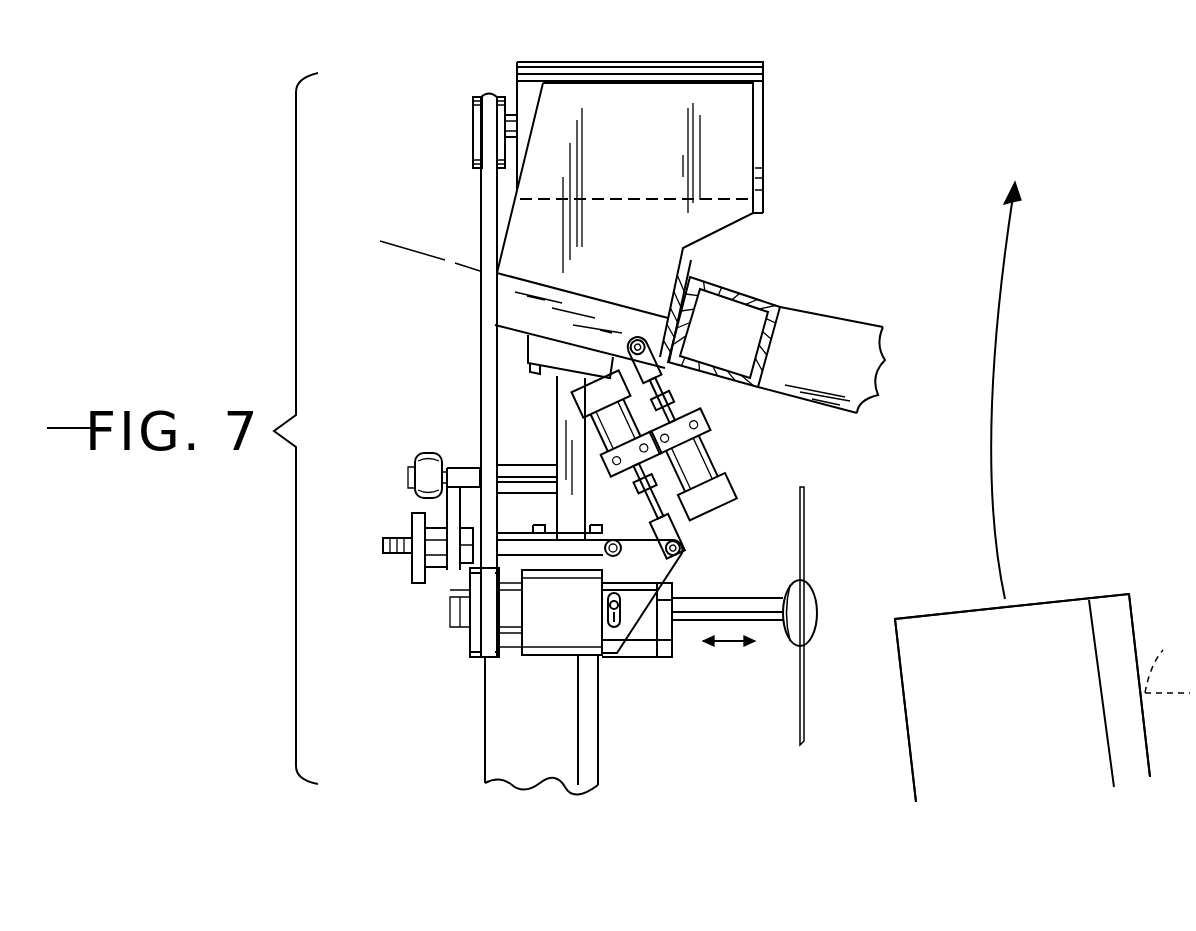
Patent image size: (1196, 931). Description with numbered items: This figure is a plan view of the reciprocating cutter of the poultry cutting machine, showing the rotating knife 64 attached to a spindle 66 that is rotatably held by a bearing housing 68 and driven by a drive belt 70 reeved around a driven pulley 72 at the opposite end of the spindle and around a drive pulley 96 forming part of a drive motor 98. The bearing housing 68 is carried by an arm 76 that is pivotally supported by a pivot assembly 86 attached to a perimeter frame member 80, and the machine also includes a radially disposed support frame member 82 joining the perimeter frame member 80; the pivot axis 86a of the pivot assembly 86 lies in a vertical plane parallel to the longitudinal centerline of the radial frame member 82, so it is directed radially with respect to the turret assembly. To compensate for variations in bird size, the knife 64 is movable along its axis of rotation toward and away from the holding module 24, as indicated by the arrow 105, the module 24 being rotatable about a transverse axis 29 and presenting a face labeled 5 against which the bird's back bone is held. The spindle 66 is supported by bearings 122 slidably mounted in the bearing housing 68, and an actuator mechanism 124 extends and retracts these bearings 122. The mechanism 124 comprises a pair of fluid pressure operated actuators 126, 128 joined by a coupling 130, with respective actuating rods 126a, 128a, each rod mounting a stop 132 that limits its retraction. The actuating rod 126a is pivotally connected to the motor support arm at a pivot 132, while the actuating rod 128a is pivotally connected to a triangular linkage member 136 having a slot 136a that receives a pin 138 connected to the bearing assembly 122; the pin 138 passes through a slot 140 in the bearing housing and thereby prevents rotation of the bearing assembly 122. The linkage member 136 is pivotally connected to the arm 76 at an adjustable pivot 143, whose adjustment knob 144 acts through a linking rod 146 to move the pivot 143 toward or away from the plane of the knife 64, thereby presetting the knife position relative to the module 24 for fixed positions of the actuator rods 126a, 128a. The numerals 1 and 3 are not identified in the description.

The drive motor 98 is at (752, 74).
The drive pulley 96 is at (473, 128).
The pivot axis 86a is at (388, 242).
The pivot assembly 86 is at (703, 262).
The stop 132 is at (638, 337).
The radially disposed support frame member 82 is at (808, 361).
The actuating rod 126a is at (724, 332).
The drive belt 70 is at (480, 380).
The fluid pressure operated actuator 128 is at (578, 410).
The actuating rod 128a is at (668, 510).
The coupling 130 is at (705, 412).
The actuator mechanism 124 is at (689, 402).
The fluid pressure operated actuator 126 is at (696, 464).
The arm 76 is at (573, 507).
The linking rod 146 is at (517, 530).
The rotating knife 64 is at (808, 534).
The spindle 66 is at (736, 597).
The triangular linkage member 136 is at (622, 578).
The pivot 143 is at (605, 556).
The slot 136a is at (606, 600).
The slot 140 is at (607, 614).
The pin 138 is at (616, 615).
The adjustment knob 144 is at (430, 585).
The driven pulley 72 is at (470, 654).
The bearing housing 68 is at (565, 660).
The bearings 122 is at (665, 652).
The arrow 105 is at (745, 648).
The perimeter frame member 80 is at (560, 748).
The container 1 is at (1008, 718).
The top edge of container 3 is at (1036, 602).
The holding module 24 is at (1076, 594).
The transverse axis 29 is at (1167, 656).
The face 5 is at (908, 760).